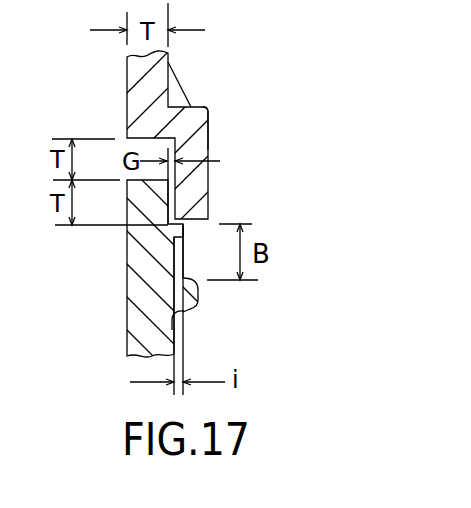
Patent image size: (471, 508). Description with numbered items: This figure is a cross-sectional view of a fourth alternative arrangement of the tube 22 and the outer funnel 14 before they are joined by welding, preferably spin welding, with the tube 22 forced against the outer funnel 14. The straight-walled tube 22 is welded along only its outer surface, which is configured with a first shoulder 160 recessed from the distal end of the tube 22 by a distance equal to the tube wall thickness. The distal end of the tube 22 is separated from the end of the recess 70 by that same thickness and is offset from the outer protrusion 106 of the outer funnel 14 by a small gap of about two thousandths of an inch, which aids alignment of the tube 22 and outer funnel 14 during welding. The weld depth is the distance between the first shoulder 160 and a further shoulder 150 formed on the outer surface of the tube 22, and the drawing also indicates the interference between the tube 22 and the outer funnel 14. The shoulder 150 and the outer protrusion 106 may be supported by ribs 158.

The outer funnel 14 is at (119, 90).
The tube 22 is at (119, 314).
The recess 70 is at (147, 181).
The outer protrusion 106 is at (209, 128).
The shoulder 150 is at (199, 302).
The ribs 158 is at (183, 90).
The first shoulder 160 is at (199, 237).